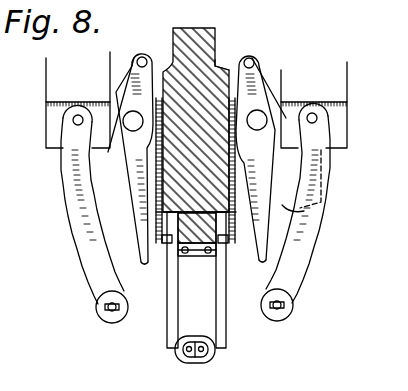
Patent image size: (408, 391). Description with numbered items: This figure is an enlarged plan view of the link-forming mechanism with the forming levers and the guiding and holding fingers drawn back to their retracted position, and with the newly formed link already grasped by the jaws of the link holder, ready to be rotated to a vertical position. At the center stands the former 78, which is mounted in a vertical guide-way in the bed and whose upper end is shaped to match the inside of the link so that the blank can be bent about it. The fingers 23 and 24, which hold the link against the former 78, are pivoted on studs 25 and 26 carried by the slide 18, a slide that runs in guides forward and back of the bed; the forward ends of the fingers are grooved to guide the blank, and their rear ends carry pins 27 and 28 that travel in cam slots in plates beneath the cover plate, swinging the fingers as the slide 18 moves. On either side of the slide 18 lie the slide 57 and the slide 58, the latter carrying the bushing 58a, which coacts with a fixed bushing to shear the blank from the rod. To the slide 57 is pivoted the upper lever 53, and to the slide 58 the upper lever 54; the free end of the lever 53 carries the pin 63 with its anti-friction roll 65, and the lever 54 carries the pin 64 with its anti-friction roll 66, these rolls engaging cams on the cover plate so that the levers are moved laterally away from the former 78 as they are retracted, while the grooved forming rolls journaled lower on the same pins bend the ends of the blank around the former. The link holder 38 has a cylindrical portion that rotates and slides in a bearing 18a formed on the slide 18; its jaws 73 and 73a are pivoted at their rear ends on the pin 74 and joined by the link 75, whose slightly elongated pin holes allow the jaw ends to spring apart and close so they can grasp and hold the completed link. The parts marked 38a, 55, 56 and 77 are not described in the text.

The slide 18 is at (124, 234).
The bearing 18a is at (156, 171).
The finger 23 is at (128, 190).
The finger 24 is at (272, 179).
The stud 25 is at (128, 115).
The stud 26 is at (263, 114).
The pin 27 is at (139, 58).
The pin 28 is at (254, 60).
The link holder 38 is at (208, 152).
The plunger head 38a is at (215, 42).
The upper lever 53 is at (66, 203).
The upper lever 54 is at (323, 240).
The pivot pin 55 is at (73, 120).
The pivot pin 56 is at (317, 118).
The slide 57 is at (78, 100).
The slide 58 is at (314, 102).
The bushing 58a is at (305, 211).
The pin 63 is at (107, 306).
The pin 64 is at (282, 305).
The anti-friction roll 65 is at (97, 311).
The anti-friction roll 66 is at (292, 314).
The link holding jaw 73 is at (167, 320).
The link holding jaw 73a is at (216, 312).
The pin 74 is at (157, 198).
The link 75 is at (198, 257).
The clip 77 is at (163, 258).
The former 78 is at (167, 364).